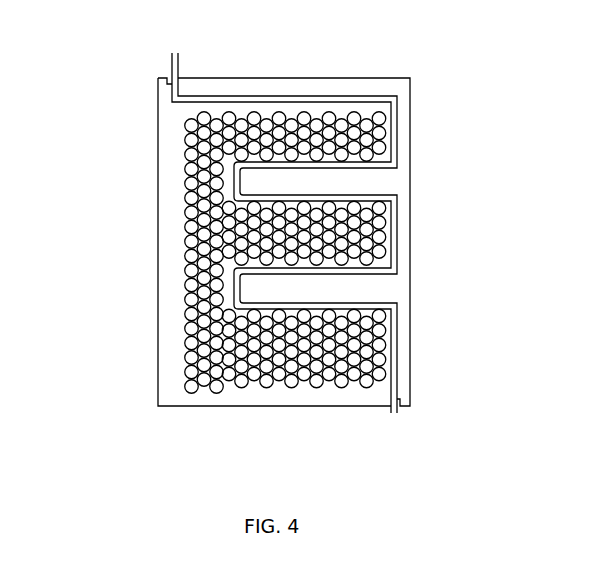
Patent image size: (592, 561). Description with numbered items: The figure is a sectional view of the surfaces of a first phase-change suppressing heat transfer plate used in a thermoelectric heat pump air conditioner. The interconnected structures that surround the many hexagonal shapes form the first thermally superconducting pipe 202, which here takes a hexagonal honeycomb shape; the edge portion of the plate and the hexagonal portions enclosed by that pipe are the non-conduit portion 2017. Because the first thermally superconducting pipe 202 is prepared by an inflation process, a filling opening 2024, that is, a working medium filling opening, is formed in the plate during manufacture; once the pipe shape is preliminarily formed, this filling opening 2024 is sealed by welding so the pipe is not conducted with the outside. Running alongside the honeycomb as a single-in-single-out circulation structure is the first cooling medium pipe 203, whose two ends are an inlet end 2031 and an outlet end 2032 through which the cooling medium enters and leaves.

The first thermally superconducting pipe 202 is at (183, 323).
The non-conduit portion 2017 is at (182, 141).
The filling opening 2024 is at (183, 229).
The first cooling medium pipe 203 is at (397, 160).
The inlet end of the first cooling medium pipe 2031 is at (178, 55).
The outlet end of the first cooling medium pipe 2032 is at (397, 413).